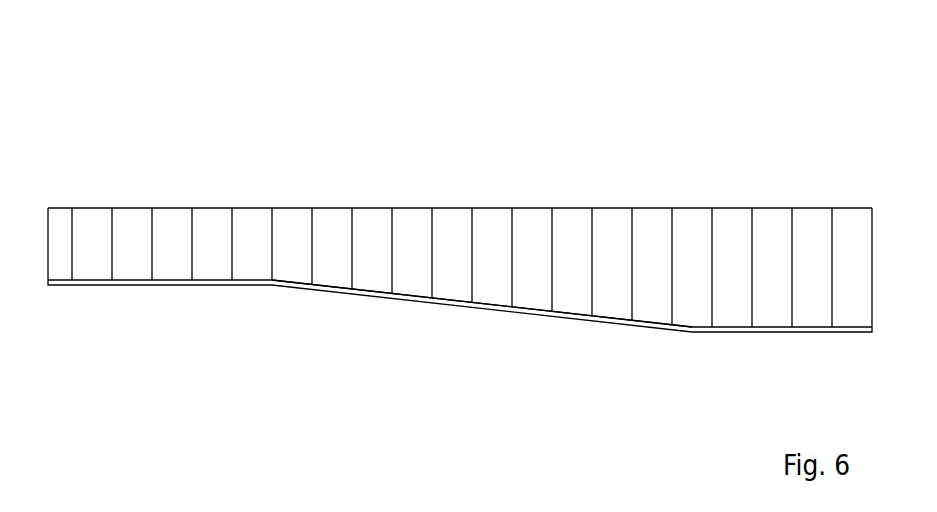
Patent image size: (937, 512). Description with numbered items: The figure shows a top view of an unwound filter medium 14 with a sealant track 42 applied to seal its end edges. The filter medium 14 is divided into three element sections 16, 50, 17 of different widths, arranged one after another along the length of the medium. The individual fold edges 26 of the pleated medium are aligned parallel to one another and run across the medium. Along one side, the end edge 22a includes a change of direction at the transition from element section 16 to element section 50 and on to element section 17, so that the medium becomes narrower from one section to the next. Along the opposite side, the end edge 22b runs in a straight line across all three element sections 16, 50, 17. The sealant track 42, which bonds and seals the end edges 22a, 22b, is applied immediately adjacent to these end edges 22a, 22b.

The filter medium 14 is at (705, 158).
The element section 16 is at (785, 269).
The element section 17 is at (182, 256).
The end edge 22a is at (440, 306).
The end edge 22b is at (460, 208).
The fold edge 26 is at (273, 247).
The sealant track 42 is at (370, 297).
The element section 50 is at (543, 256).